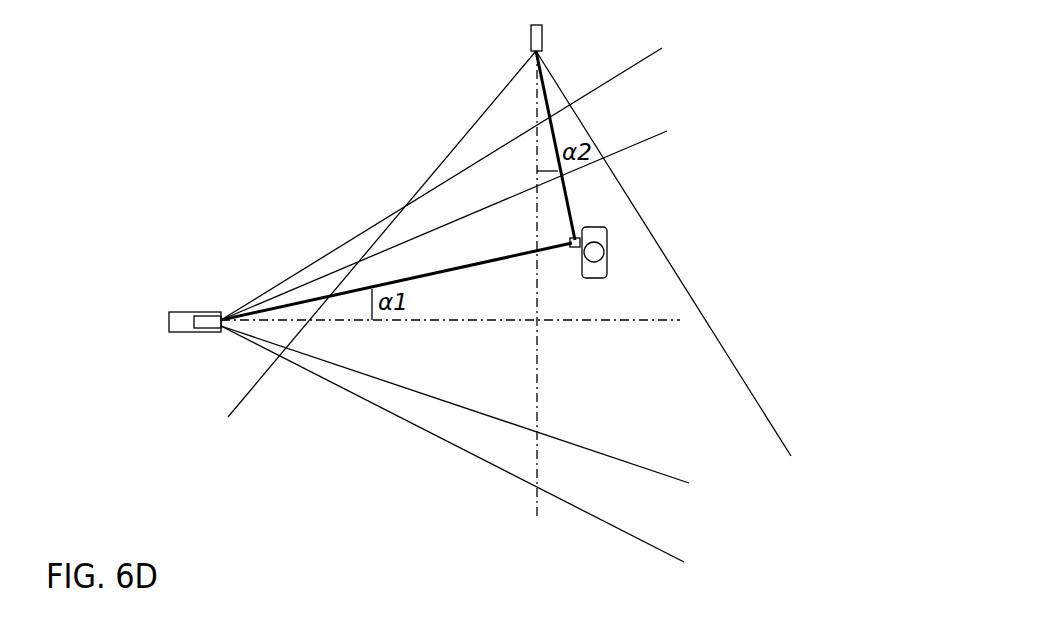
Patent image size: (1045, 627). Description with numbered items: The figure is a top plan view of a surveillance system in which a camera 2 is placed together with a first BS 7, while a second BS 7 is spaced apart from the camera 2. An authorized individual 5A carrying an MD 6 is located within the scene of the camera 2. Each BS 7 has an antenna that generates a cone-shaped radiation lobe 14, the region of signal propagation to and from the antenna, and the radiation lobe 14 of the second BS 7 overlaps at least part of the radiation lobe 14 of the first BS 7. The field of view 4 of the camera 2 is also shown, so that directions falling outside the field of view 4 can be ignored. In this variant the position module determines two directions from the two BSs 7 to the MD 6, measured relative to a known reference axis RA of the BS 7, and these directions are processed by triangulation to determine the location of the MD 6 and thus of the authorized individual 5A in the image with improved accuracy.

The camera 2 is at (182, 312).
The BS 7 is at (203, 316).
The radiation lobe 14 is at (347, 237).
The field of view 4 is at (318, 270).
The MD 6 is at (576, 250).
The authorized individual 5A is at (606, 270).
The reference axis RA is at (548, 325).